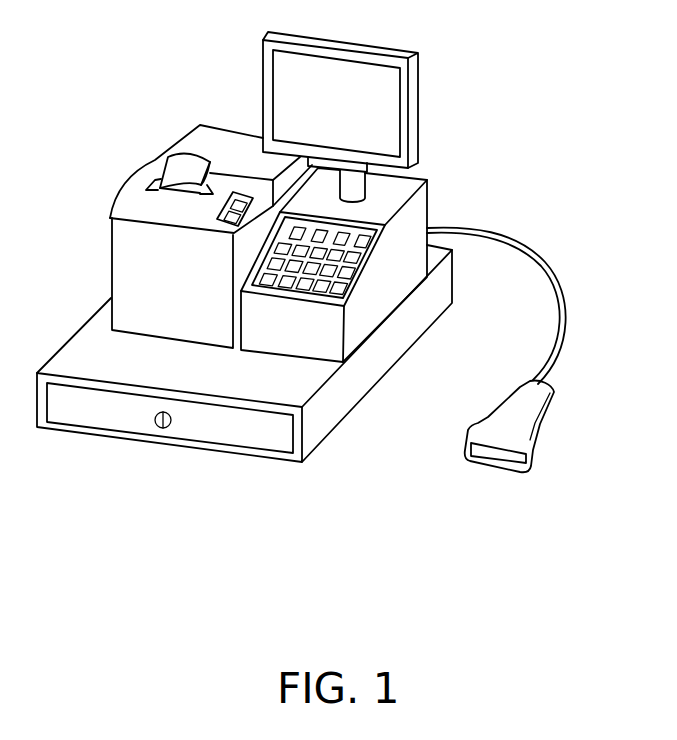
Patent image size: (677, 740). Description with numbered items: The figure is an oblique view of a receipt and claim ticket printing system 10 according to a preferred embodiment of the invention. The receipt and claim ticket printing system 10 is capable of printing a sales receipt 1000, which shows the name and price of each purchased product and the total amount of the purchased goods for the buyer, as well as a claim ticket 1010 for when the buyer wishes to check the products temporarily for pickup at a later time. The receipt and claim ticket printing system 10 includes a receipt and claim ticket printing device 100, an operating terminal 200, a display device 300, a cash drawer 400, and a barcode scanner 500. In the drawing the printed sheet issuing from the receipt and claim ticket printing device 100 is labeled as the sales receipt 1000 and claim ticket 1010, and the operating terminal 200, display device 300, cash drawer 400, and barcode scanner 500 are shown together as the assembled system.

The receipt and claim ticket printing system 10 is at (291, 535).
The receipt and claim ticket printing device 100 is at (140, 177).
The operating terminal 200 is at (430, 215).
The display device 300 is at (265, 66).
The cash drawer 400 is at (443, 287).
The barcode scanner 500 is at (543, 423).
The sales receipt 1000 is at (183, 167).
The claim ticket 1010 is at (185, 173).